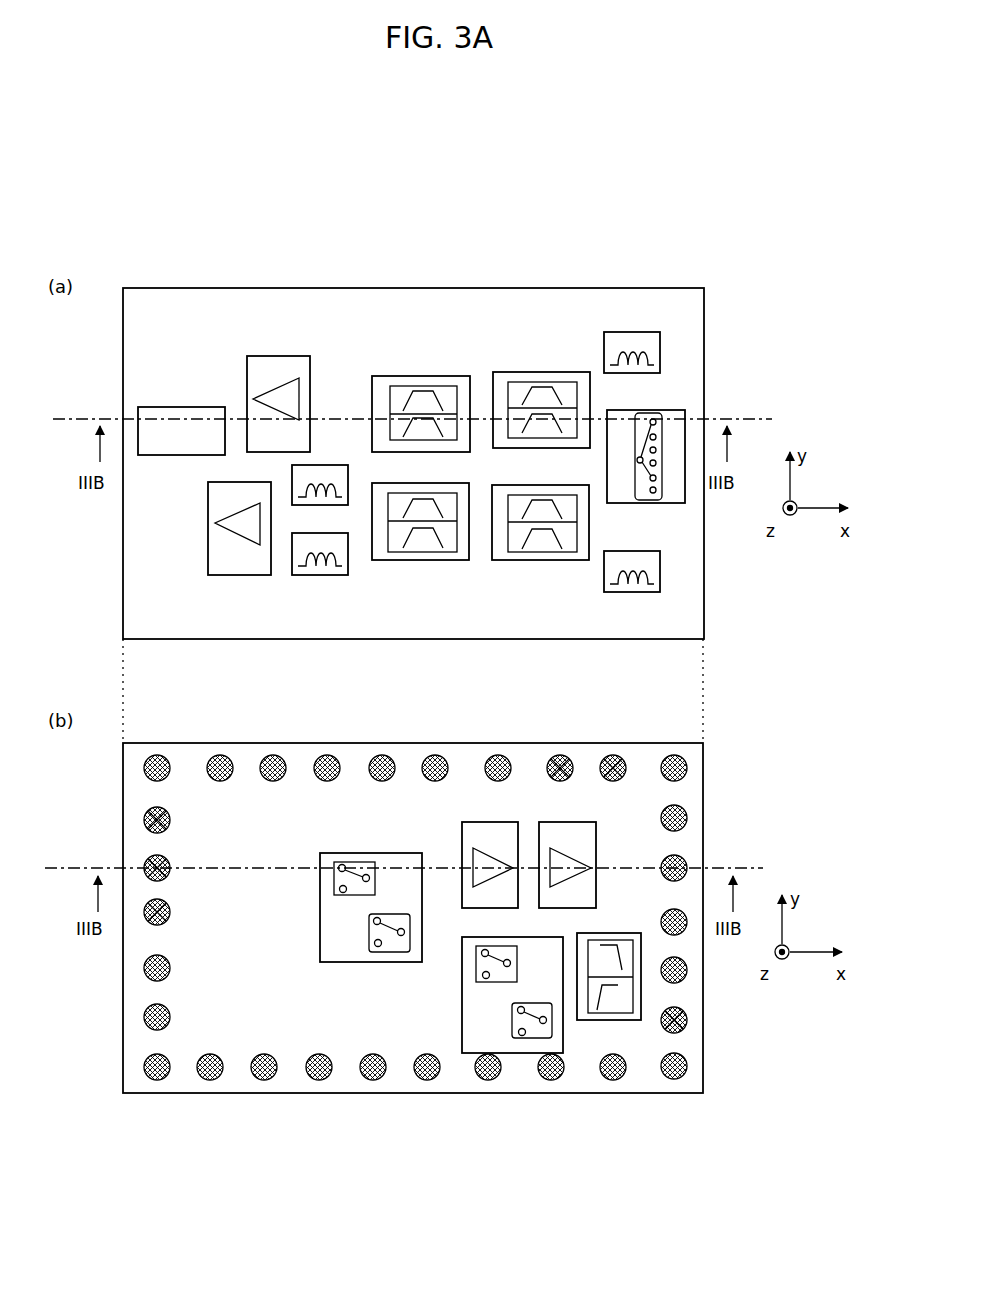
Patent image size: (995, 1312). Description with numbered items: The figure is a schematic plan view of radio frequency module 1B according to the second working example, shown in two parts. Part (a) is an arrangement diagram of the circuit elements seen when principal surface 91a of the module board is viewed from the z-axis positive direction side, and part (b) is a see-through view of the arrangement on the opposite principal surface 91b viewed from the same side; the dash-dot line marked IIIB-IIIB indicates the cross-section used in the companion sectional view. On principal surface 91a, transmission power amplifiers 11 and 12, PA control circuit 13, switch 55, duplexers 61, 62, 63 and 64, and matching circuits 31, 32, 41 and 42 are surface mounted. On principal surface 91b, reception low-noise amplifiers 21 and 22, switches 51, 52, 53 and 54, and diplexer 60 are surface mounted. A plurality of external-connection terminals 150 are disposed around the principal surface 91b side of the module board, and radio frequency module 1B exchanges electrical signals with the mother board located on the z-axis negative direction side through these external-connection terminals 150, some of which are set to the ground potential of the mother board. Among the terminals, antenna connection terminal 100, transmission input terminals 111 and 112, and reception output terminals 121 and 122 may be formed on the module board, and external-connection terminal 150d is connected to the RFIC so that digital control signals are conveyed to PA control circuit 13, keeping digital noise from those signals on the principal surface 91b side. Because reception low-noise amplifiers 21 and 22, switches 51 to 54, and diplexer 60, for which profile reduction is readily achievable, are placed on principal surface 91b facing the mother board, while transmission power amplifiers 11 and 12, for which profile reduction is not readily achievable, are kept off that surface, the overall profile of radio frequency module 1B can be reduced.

The radio frequency module 1B is at (784, 298).
The principal surface 91a is at (693, 353).
The principal surface 91b is at (693, 795).
The transmission power amplifier 11 is at (268, 355).
The transmission power amplifier 12 is at (230, 577).
The PA control circuit 13 is at (181, 418).
The reception low-noise amplifier 21 is at (484, 821).
The reception low-noise amplifier 22 is at (561, 821).
The matching circuit 31 is at (308, 505).
The matching circuit 32 is at (308, 575).
The matching circuit 41 is at (627, 332).
The matching circuit 42 is at (632, 593).
The switch 51 is at (377, 873).
The switch 52 is at (369, 918).
The switch 53 is at (518, 960).
The switch 54 is at (512, 1008).
The switch 55 is at (637, 408).
The diplexer 60 is at (605, 1020).
The duplexer 61 is at (398, 374).
The duplexer 62 is at (530, 371).
The duplexer 63 is at (398, 560).
The duplexer 64 is at (527, 560).
The antenna connection terminal 100 is at (687, 1025).
The transmission input terminal 111 is at (150, 811).
The transmission input terminal 112 is at (148, 922).
The reception output terminal 121 is at (565, 756).
The reception output terminal 122 is at (618, 756).
The external-connection terminal 150 is at (376, 757).
The external-connection terminal 150d is at (148, 860).